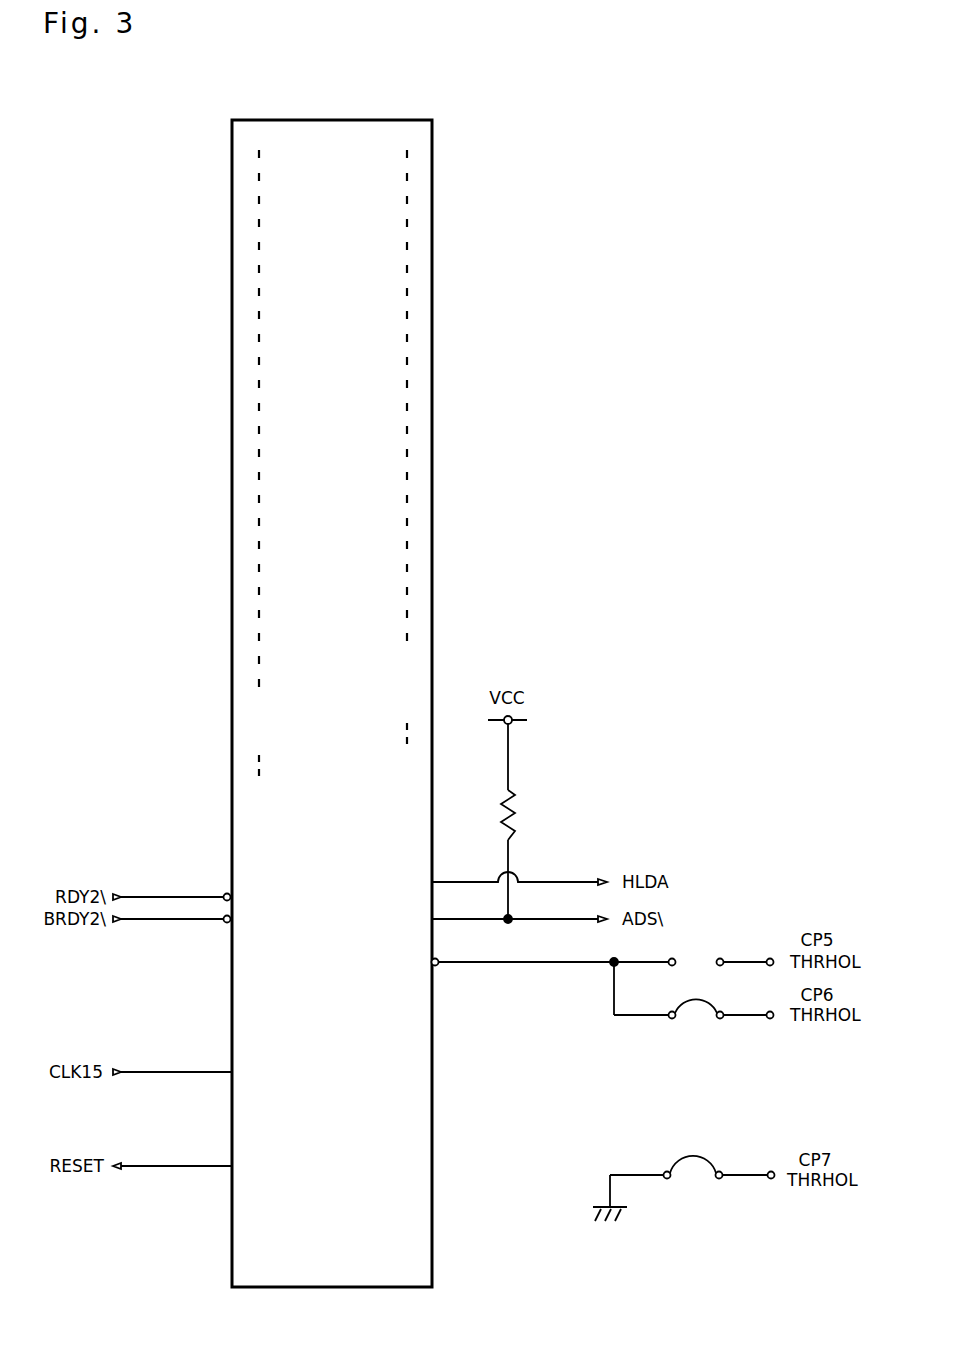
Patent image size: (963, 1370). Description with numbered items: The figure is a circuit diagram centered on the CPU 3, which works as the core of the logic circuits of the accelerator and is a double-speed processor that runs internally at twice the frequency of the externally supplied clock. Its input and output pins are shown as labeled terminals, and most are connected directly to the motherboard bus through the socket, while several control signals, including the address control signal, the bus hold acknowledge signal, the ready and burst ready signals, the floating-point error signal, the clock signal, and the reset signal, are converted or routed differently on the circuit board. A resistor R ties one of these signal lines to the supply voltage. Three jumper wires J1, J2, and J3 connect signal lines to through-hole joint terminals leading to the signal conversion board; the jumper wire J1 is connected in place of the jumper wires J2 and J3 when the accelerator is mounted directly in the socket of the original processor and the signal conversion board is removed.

The CPU 3 is at (291, 120).
The resistor R is at (516, 811).
The jumper wire J1 is at (694, 957).
The jumper wire J2 is at (691, 1010).
The jumper wire J3 is at (693, 1150).